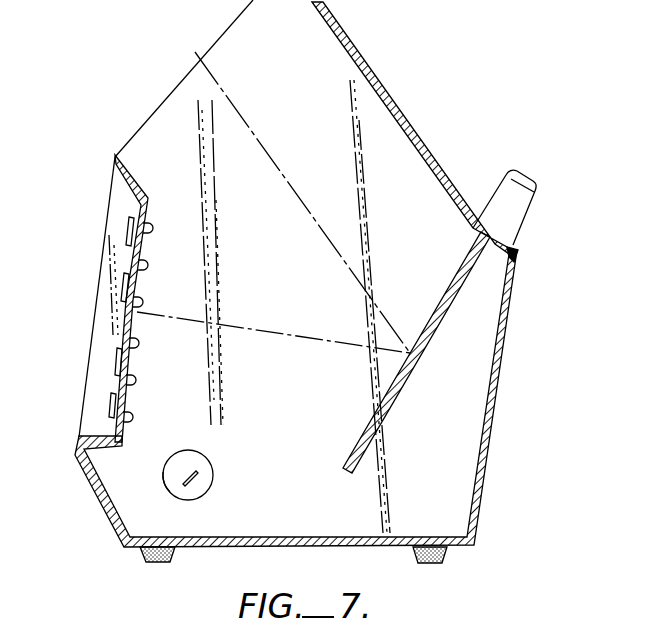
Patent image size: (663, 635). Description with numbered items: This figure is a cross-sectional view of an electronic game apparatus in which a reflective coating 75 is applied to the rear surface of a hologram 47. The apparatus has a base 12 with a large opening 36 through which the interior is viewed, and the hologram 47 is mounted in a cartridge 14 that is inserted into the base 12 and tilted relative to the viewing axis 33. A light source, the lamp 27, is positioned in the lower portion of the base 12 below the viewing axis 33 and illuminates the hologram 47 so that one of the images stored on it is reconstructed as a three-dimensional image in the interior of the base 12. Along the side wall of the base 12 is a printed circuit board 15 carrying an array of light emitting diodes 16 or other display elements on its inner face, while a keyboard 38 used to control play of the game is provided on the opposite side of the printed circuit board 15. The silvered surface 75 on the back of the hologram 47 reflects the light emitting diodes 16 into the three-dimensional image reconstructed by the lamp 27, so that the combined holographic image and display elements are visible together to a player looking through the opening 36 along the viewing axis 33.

The opening 36 is at (94, 130).
The viewing axis 33 is at (200, 55).
The cartridge 14 is at (527, 176).
The hologram 47 is at (440, 313).
The reflective coating 75 is at (415, 350).
The base 12 is at (488, 453).
The lamp 27 is at (207, 463).
The printed circuit board 15 is at (117, 378).
The light emitting diodes 16 is at (133, 310).
The keyboard 38 is at (125, 283).